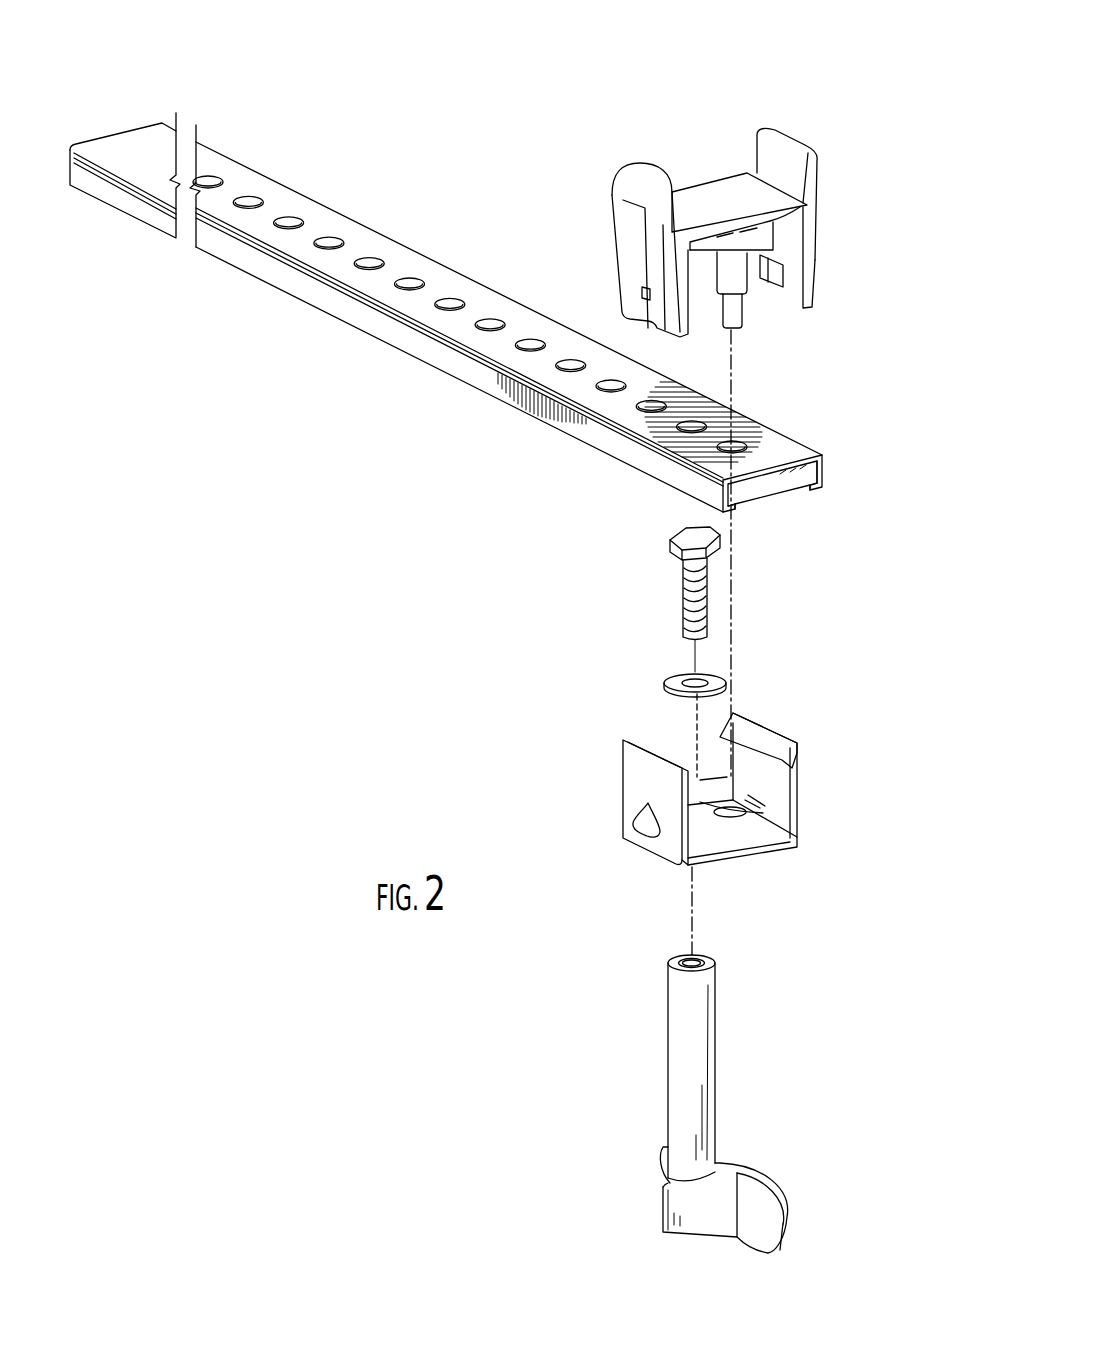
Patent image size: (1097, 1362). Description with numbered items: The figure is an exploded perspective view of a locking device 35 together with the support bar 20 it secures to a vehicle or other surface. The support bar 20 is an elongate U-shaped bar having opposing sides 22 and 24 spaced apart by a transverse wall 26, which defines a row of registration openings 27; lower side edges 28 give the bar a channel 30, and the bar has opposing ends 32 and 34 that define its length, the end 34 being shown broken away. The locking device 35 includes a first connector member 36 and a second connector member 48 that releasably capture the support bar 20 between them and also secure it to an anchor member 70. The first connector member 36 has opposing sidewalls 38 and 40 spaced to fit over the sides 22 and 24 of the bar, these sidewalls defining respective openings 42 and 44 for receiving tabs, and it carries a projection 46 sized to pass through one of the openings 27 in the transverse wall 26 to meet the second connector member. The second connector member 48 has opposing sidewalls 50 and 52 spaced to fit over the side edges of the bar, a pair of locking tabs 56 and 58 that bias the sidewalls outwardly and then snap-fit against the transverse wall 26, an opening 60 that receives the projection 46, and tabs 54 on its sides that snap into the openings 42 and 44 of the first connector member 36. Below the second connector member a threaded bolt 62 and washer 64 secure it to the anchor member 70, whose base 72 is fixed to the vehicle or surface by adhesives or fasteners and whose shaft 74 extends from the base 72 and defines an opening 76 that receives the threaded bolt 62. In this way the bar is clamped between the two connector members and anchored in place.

The support bar 20 is at (539, 350).
The opposing side 22 is at (822, 468).
The opposing side 24 is at (663, 470).
The transverse wall 26 is at (402, 250).
The openings 27 is at (317, 250).
The lower side edges 28 is at (810, 492).
The channel 30 is at (762, 489).
The end 32 is at (832, 478).
The end 34 is at (93, 130).
The locking device 35 is at (710, 194).
The first connector member 36 is at (830, 198).
The sidewall 38 is at (810, 263).
The sidewall 40 is at (618, 267).
The opening 42 is at (773, 288).
The opening 44 is at (643, 296).
The projection 46 is at (744, 312).
The second connector member 48 is at (712, 790).
The sidewall 50 is at (797, 753).
The sidewall 52 is at (682, 837).
The tabs 54 is at (643, 820).
The locking tab 56 is at (722, 710).
The locking tab 58 is at (688, 800).
The opening 60 is at (732, 818).
The threaded bolt 62 is at (680, 602).
The washer 64 is at (662, 683).
The anchor member 70 is at (751, 1089).
The base 72 is at (787, 1210).
The shaft 74 is at (717, 1073).
The opening 76 is at (703, 955).